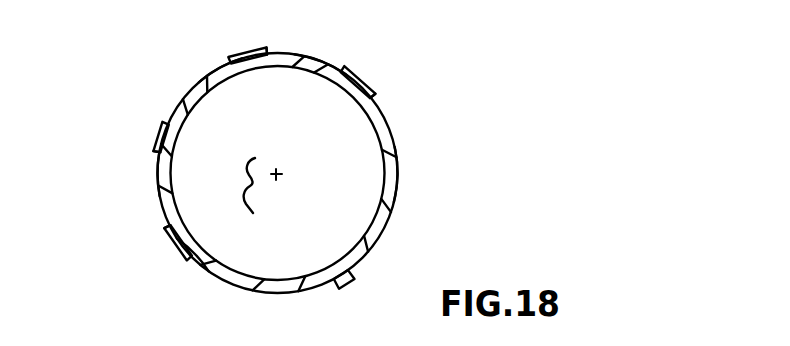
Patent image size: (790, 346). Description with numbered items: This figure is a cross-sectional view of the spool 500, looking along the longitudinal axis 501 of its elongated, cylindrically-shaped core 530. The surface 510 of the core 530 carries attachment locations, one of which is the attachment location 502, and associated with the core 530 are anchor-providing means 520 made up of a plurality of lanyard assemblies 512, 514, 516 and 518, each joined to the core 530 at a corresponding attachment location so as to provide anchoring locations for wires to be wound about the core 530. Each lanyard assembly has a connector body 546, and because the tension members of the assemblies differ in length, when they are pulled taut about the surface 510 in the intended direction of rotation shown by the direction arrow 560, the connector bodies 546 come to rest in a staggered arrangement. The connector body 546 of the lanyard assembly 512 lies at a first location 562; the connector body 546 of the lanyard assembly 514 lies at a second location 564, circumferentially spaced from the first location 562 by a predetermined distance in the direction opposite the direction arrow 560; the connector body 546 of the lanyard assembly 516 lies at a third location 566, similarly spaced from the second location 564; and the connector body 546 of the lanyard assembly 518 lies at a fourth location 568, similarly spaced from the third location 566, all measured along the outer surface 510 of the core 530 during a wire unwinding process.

The spool 500 is at (505, 139).
The longitudinal axis 501 is at (278, 172).
The attachment location 502 is at (344, 283).
The surface 510 is at (396, 196).
The lanyard assembly 512 is at (350, 68).
The lanyard assembly 514 is at (228, 63).
The lanyard assembly 516 is at (156, 154).
The lanyard assembly 518 is at (173, 256).
The anchor-providing means 520 is at (136, 214).
The core 530 is at (398, 178).
The connector body 546 is at (245, 50).
The direction arrow 560 is at (264, 195).
The first location 562 is at (366, 83).
The second location 564 is at (268, 55).
The third location 566 is at (153, 138).
The fourth location 568 is at (168, 241).